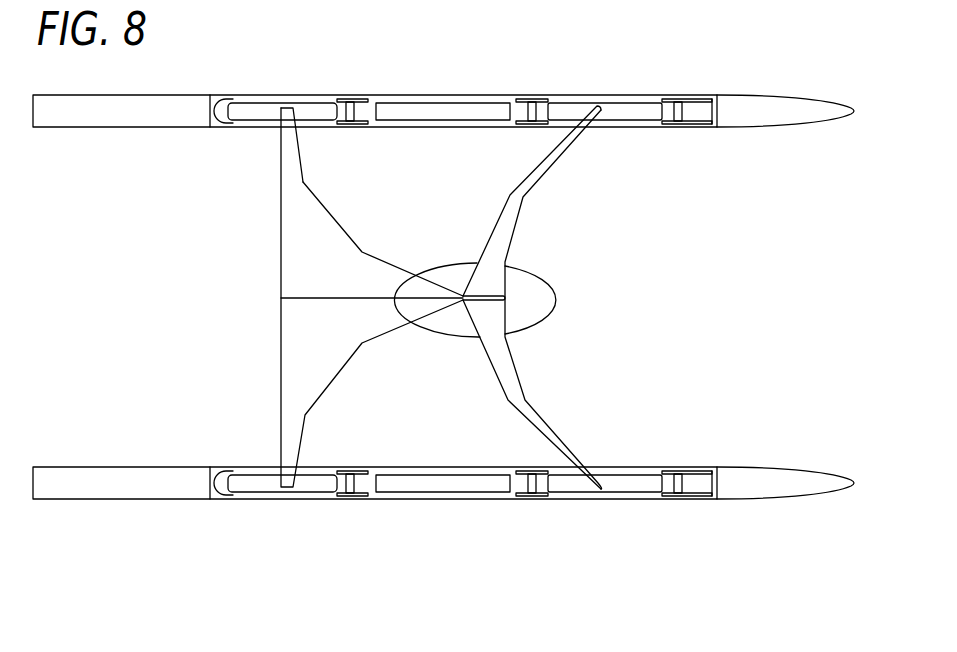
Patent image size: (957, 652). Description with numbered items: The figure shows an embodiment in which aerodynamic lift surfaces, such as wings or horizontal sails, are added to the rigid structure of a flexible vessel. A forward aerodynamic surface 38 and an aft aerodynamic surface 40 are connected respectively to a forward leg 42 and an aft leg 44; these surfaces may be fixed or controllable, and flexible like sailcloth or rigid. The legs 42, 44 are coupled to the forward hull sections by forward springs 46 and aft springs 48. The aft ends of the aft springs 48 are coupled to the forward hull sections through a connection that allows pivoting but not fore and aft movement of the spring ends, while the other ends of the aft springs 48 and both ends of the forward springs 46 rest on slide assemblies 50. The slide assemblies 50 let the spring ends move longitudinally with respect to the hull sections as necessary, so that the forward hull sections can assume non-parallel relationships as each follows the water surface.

The forward aerodynamic surface 38 is at (493, 223).
The aft aerodynamic surface 40 is at (297, 323).
The forward leg 42 is at (523, 222).
The aft leg 44 is at (335, 217).
The forward spring 46 is at (606, 467).
The aft spring 48 is at (253, 467).
The slide assembly 50 is at (351, 98).